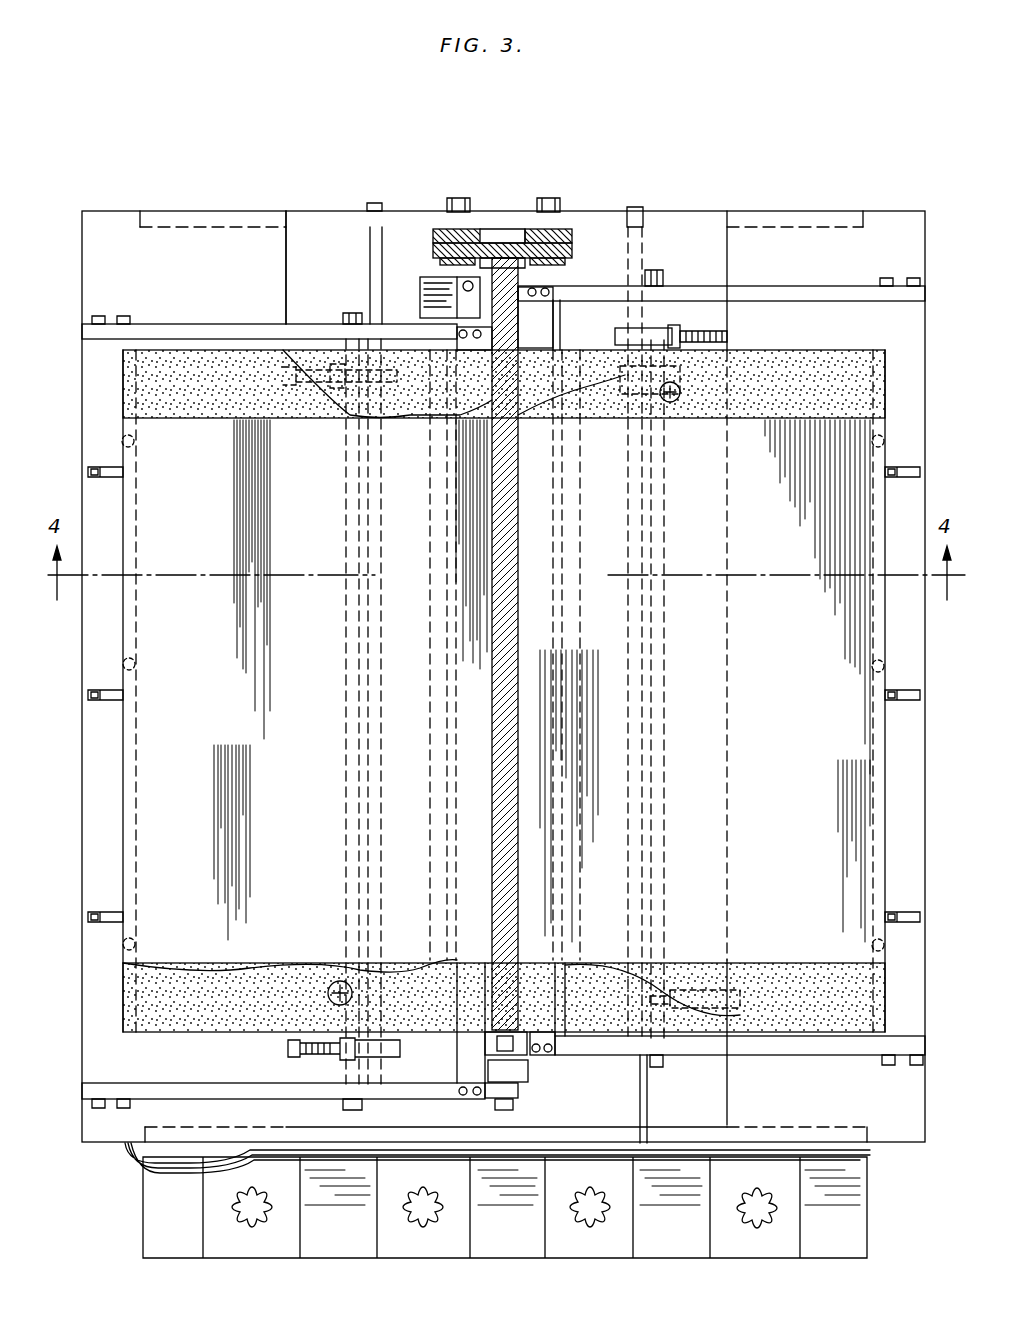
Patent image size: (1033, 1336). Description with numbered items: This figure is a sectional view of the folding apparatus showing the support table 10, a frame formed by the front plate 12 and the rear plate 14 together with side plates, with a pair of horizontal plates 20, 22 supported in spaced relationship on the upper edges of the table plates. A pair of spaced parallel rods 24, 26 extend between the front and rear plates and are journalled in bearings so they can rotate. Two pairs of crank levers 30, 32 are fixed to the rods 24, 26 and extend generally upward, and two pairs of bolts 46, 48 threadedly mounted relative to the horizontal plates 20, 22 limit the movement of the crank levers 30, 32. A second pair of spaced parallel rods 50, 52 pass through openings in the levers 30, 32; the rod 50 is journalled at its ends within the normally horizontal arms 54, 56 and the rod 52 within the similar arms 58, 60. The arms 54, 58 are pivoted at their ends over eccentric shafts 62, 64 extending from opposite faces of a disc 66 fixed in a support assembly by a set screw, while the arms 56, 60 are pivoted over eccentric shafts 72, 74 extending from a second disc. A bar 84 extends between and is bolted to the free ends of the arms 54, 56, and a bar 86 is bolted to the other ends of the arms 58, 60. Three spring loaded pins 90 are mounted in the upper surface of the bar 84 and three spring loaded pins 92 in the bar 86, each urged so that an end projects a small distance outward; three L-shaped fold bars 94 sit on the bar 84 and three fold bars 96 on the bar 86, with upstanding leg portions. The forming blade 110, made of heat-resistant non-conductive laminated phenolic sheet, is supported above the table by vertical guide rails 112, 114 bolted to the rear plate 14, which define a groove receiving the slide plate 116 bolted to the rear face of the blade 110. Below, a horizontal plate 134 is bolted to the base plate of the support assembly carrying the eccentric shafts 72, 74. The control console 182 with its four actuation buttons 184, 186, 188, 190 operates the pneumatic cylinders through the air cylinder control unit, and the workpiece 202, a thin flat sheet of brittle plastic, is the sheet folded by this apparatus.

The support table 10 is at (100, 206).
The front plate 12 is at (678, 1133).
The rear plate 14 is at (712, 212).
The horizontal plate 20 is at (106, 1120).
The horizontal plate 22 is at (888, 237).
The rod 24 is at (385, 740).
The rod 26 is at (628, 600).
The crank lever 30 is at (386, 376).
The crank lever 32 is at (632, 380).
The bolt 46 is at (322, 372).
The bolt 48 is at (700, 334).
The rod 50 is at (342, 718).
The rod 52 is at (670, 726).
The arm 54 is at (200, 1083).
The arm 56 is at (247, 324).
The arm 58 is at (798, 1055).
The arm 60 is at (770, 286).
The eccentric shaft 62 is at (512, 1108).
The eccentric shaft 64 is at (515, 1040).
The disc 66 is at (528, 1070).
The eccentric shaft 72 is at (518, 357).
The eccentric shaft 74 is at (540, 278).
The bar 84 is at (105, 796).
The bar 86 is at (906, 628).
The spring loaded pin 90 is at (134, 441).
The spring loaded pin 92 is at (880, 440).
The fold bar 94 is at (112, 478).
The fold bar 96 is at (906, 478).
The forming blade 110 is at (520, 693).
The guide rail 112 is at (440, 230).
The guide rail 114 is at (562, 230).
The slide plate 116 is at (504, 240).
The horizontal plate 134 is at (420, 290).
The control console 182 is at (578, 1245).
The actuation button 184 is at (262, 1215).
The actuation button 186 is at (430, 1215).
The actuation button 188 is at (598, 1215).
The actuation button 190 is at (765, 1215).
The workpiece 202 is at (207, 550).